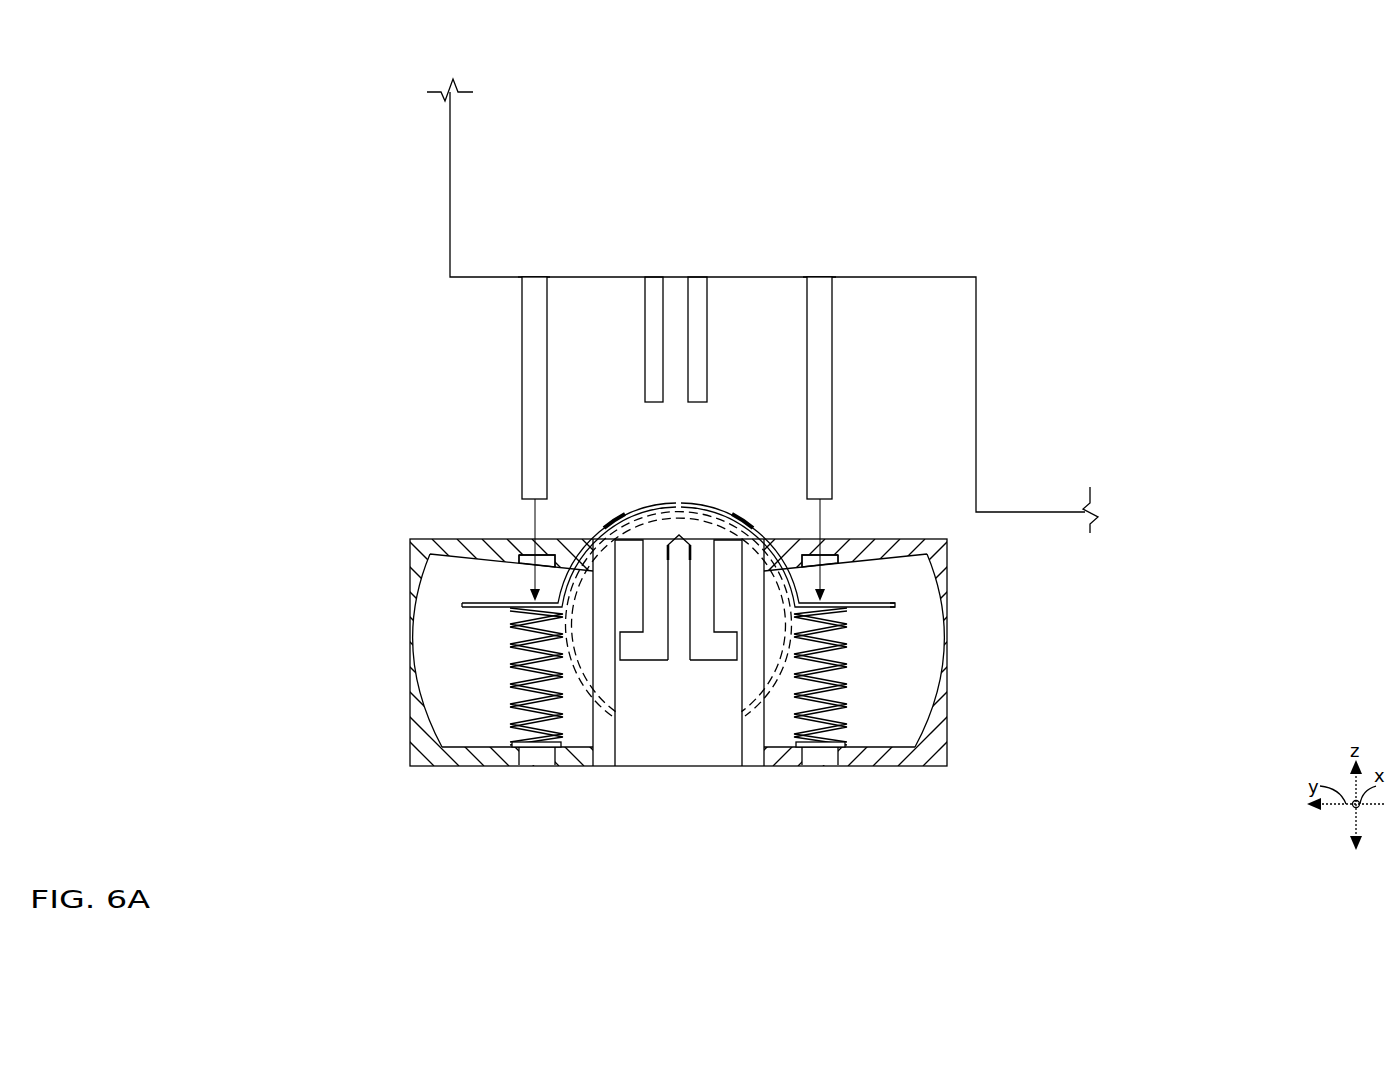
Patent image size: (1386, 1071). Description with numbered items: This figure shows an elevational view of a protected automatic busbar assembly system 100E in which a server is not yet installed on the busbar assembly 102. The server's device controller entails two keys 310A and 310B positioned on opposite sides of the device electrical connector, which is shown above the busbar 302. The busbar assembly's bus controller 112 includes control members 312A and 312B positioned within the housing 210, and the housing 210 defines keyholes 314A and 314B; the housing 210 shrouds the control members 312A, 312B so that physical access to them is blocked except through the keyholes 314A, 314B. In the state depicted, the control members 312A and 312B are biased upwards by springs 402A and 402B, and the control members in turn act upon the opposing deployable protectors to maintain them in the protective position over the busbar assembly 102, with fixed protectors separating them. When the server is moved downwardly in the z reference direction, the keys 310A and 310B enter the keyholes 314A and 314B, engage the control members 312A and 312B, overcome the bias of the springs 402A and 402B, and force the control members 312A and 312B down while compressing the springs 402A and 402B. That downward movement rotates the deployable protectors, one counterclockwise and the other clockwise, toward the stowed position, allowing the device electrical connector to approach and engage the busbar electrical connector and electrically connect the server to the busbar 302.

The system 100E is at (245, 105).
The key 310A is at (522, 414).
The key 310B is at (832, 398).
The keyhole 314A is at (527, 545).
The keyhole 314B is at (830, 545).
The bus controller 112 is at (912, 603).
The control member 312A is at (477, 608).
The control member 312B is at (880, 609).
The spring 402A is at (517, 722).
The spring 402B is at (840, 722).
The busbar assembly 102 is at (711, 660).
The busbar 302 is at (627, 767).
The housing 210 is at (873, 767).